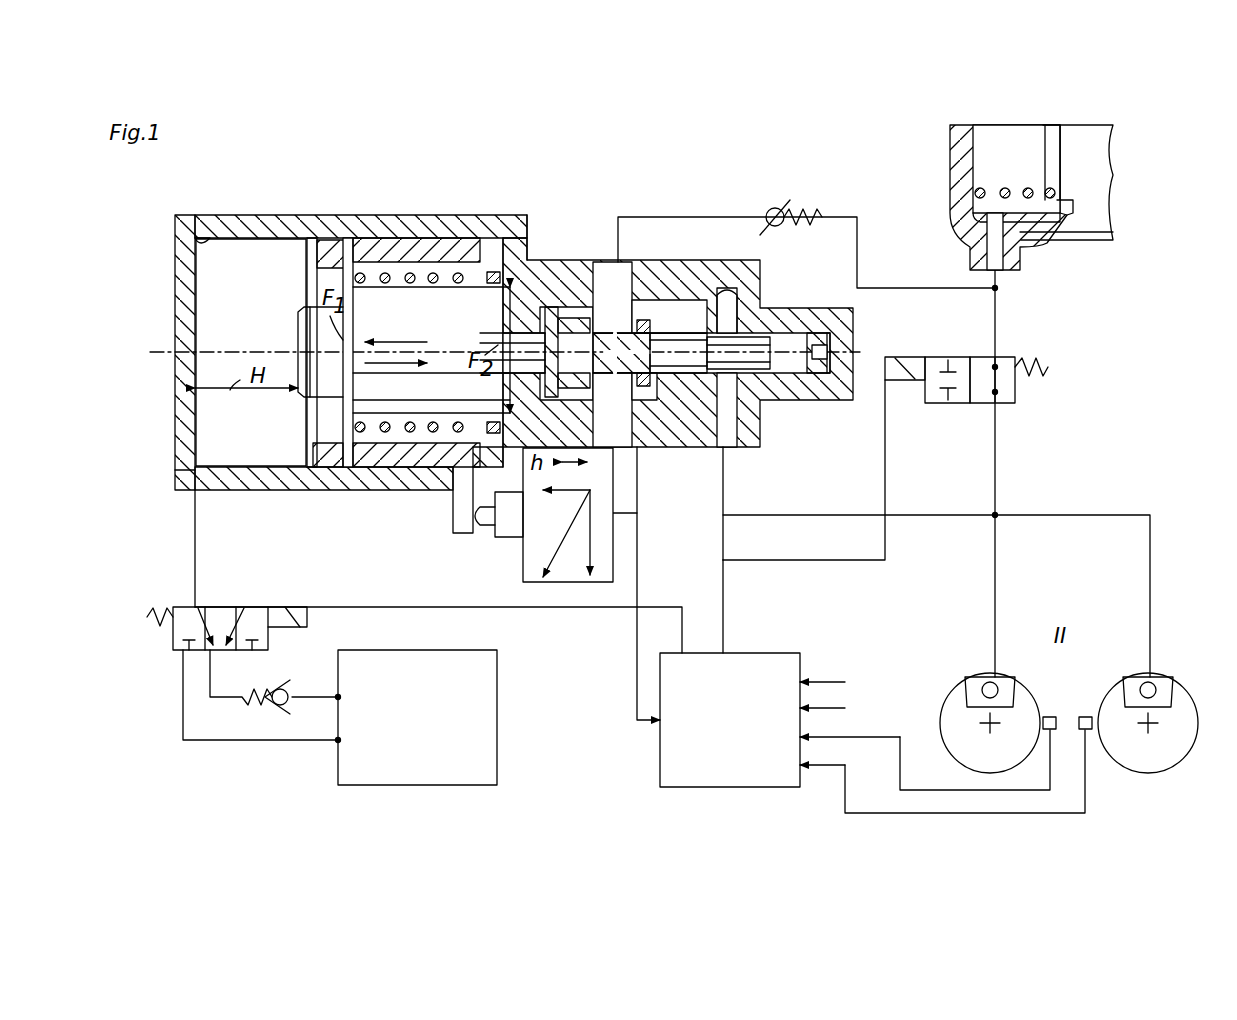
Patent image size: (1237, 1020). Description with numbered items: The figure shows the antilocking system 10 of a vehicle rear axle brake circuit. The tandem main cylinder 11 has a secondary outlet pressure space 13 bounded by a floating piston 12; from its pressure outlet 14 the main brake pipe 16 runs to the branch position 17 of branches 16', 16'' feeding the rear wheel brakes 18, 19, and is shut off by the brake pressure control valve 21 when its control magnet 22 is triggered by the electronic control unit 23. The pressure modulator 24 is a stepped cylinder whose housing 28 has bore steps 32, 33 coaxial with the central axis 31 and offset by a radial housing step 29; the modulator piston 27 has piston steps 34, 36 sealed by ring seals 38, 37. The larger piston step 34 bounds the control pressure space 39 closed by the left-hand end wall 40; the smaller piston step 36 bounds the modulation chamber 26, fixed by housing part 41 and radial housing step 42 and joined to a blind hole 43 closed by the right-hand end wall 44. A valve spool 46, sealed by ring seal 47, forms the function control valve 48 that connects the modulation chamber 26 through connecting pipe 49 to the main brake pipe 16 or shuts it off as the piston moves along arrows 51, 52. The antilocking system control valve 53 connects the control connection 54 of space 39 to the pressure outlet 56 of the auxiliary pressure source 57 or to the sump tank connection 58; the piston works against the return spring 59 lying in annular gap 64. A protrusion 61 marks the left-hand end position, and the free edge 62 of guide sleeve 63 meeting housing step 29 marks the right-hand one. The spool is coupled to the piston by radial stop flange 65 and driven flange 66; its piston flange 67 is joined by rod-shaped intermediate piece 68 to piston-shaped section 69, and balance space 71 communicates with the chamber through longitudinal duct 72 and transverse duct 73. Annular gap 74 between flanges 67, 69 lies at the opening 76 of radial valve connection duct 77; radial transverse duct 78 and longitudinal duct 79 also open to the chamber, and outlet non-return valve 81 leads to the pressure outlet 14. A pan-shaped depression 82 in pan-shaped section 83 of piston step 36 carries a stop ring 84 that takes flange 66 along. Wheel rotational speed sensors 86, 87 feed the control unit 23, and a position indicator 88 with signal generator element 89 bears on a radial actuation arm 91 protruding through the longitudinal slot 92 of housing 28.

The antilocking system 10 is at (1115, 388).
The tandem main cylinder 11 is at (1120, 218).
The floating piston 12 is at (1085, 148).
The secondary outlet pressure space 13 is at (985, 145).
The pressure outlet 14 is at (995, 257).
The main brake pipe 16 is at (1058, 473).
The brake pipe branch 16' is at (942, 600).
The brake pipe branch 16'' is at (1188, 555).
The branch position 17 is at (997, 513).
The left-hand rear wheel brake 18 is at (950, 705).
The right-hand rear wheel brake 19 is at (1175, 705).
The brake pressure control valve 21 is at (1012, 403).
The control magnet 22 is at (905, 383).
The electronic control unit 23 is at (722, 777).
The pressure modulator 24 is at (422, 212).
The modulation chamber 26 is at (628, 262).
The modulator piston 27 is at (300, 414).
The modulator housing 28 is at (525, 255).
The radial housing step 29 is at (500, 290).
The central axis 31 is at (160, 353).
The bore step 32 is at (178, 240).
The bore step 33 is at (636, 583).
The piston step 34 is at (305, 440).
The piston step 36 is at (398, 440).
The ring seal 37 is at (505, 300).
The ring seal 38 is at (330, 240).
The control pressure space 39 is at (205, 292).
The left-hand end wall 40 is at (180, 462).
The housing part 41 is at (700, 447).
The radial housing step 42 is at (640, 447).
The blind hole 43 is at (800, 325).
The right-hand end wall 44 is at (860, 290).
The valve spool 46 is at (813, 375).
The ring seal 47 is at (672, 335).
The function control valve 48 is at (720, 335).
The connecting pipe 49 is at (800, 515).
The arrow 51 is at (400, 340).
The arrow 52 is at (393, 368).
The antilocking system control valve 53 is at (225, 615).
The control connection 54 is at (193, 505).
The pressure outlet 56 is at (338, 697).
The auxiliary pressure source 57 is at (480, 695).
The sump tank connection 58 is at (338, 742).
The return spring 59 is at (458, 500).
The protrusion 61 is at (297, 330).
The free edge 62 is at (492, 270).
The guide sleeve 63 is at (395, 238).
The annular gap 64 is at (355, 262).
The radial stop flange 65 is at (510, 375).
The driven flange 66 is at (550, 305).
The piston flange 67 is at (860, 330).
The rod-shaped intermediate piece 68 is at (776, 400).
The piston-shaped section 69 is at (680, 440).
The balance space 71 is at (860, 345).
The longitudinal duct 72 is at (838, 373).
The transverse duct 73 is at (630, 330).
The annular gap 74 is at (765, 333).
The opening 76 is at (750, 430).
The radial valve connection duct 77 is at (723, 460).
The radial transverse duct 78 is at (745, 297).
The longitudinal duct 79 is at (725, 290).
The outlet non-return valve 81 is at (768, 210).
The pan-shaped depression 82 is at (575, 318).
The pan-shaped section 83 is at (568, 305).
The stop ring 84 is at (560, 300).
The wheel rotational speed sensor 86 is at (1048, 715).
The wheel rotational speed sensor 87 is at (1086, 715).
The position indicator 88 is at (570, 585).
The signal generator element 89 is at (498, 530).
The radial actuation arm 91 is at (478, 525).
The longitudinal slot 92 is at (415, 485).